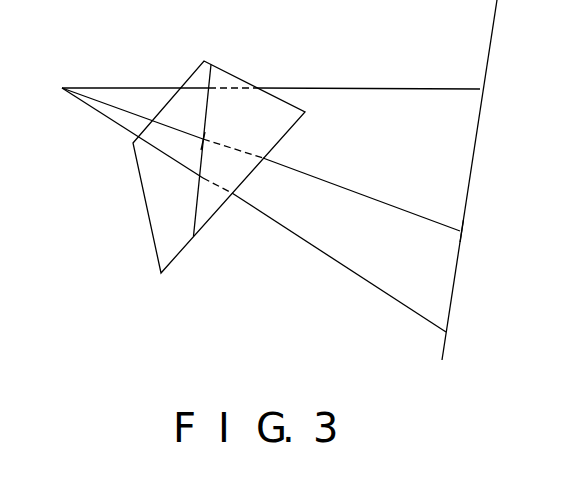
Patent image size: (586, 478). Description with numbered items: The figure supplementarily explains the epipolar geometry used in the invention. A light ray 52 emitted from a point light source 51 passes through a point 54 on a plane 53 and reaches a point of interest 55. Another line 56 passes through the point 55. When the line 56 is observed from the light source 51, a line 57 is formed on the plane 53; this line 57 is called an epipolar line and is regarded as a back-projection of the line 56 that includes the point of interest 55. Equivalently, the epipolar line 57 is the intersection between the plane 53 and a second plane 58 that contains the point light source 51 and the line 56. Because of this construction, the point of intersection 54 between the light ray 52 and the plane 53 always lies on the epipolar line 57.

The light source 51 is at (62, 88).
The light ray 52 is at (378, 200).
The plane 53 is at (178, 245).
The point 54 is at (203, 141).
The point 55 is at (462, 230).
The line 56 is at (492, 31).
The epipolar line 57 is at (202, 158).
The plane 58 is at (373, 105).